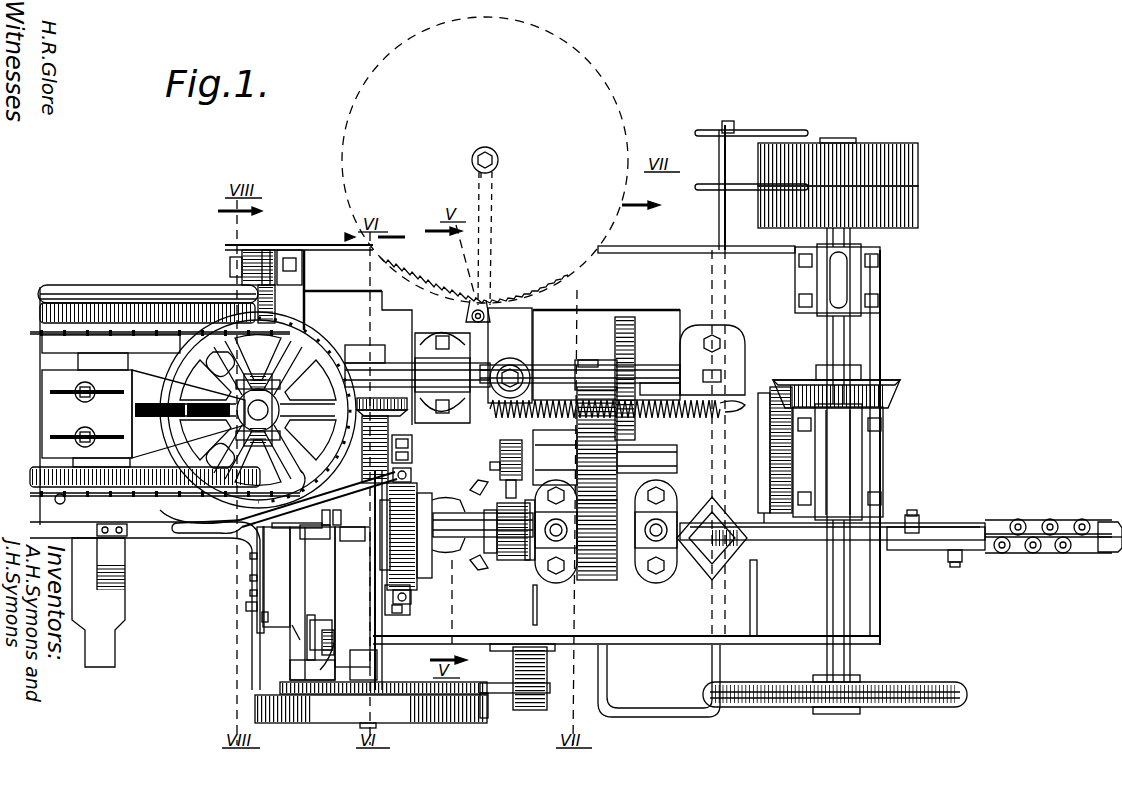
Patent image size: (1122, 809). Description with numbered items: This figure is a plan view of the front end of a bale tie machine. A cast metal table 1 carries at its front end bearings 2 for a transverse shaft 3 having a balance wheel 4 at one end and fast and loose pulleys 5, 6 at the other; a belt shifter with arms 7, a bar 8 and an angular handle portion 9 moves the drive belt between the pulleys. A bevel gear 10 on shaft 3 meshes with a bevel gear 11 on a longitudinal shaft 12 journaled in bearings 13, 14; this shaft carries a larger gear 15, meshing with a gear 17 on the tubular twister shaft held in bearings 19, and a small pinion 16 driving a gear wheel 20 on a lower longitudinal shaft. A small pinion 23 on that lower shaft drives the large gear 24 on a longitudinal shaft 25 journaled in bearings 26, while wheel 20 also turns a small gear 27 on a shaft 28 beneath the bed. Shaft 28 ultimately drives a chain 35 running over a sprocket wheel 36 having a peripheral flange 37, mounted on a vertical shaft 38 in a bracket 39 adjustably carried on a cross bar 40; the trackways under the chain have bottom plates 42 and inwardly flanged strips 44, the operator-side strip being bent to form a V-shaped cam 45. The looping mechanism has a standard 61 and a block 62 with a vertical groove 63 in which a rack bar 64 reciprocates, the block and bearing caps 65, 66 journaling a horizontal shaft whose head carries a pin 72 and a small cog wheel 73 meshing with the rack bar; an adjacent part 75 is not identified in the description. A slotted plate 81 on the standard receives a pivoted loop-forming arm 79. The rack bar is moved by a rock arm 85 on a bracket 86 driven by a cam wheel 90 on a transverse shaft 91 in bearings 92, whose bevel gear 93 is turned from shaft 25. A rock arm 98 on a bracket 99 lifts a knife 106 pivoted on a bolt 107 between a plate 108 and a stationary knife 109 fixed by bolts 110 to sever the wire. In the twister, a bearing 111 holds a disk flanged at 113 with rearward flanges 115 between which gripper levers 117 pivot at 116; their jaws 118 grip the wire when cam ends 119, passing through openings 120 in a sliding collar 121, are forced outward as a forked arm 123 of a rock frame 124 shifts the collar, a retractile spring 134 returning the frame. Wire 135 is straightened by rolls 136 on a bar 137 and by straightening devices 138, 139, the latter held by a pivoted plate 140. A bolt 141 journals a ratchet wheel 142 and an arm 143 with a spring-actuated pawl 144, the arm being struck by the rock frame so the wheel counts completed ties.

The table 1 is at (881, 345).
The bearings 2 is at (881, 283).
The transverse shaft 3 is at (851, 663).
The balance wheel 4 is at (985, 677).
The fast pulley 5 is at (919, 208).
The loose pulley 6 is at (919, 163).
The arms 7 is at (748, 137).
The bar 8 is at (718, 220).
The angular portion 9 is at (659, 681).
The bevel gear 10 is at (898, 381).
The bevel gear 11 is at (778, 386).
The longitudinal shaft 12 is at (660, 418).
The bearing 13 is at (763, 392).
The bearing 14 is at (576, 433).
The larger gear 15 is at (618, 480).
The small pinion 16 is at (555, 457).
The gear 17 is at (598, 582).
The bearings 19 is at (556, 584).
The gear wheel 20 is at (578, 368).
The small pinion 23 is at (645, 398).
The large gear 24 is at (614, 327).
The longitudinal shaft 25 is at (408, 362).
The bearings 26 is at (418, 345).
The small gear 27 is at (585, 360).
The longitudinal shaft 28 is at (365, 335).
The chain 35 is at (95, 496).
The sprocket wheel 36 is at (228, 335).
The peripheral flange 37 is at (240, 330).
The vertical shaft 38 is at (247, 410).
The bracket 39 is at (125, 398).
The cross bar 40 is at (126, 598).
The bottom plates 42 is at (70, 290).
The longitudinal strips 44 is at (105, 330).
The V-shaped cam 45 is at (230, 508).
The standard 61 is at (290, 653).
The block 62 is at (312, 603).
The vertical groove 63 is at (321, 625).
The rack bar 64 is at (307, 648).
The bearing cap 65 is at (352, 597).
The bearing cap 66 is at (377, 668).
The pin 72 is at (273, 580).
The small cog wheel 73 is at (335, 645).
The bar 75 is at (295, 549).
The pivoted arm 79 is at (341, 507).
The plate 81 is at (319, 507).
The rock arm 85 is at (505, 694).
The bracket 86 is at (503, 651).
The cam wheel 90 is at (322, 723).
The transverse shaft 91 is at (378, 727).
The bearings 92 is at (410, 450).
The bevel gear 93 is at (372, 398).
The rock arm 98 is at (272, 253).
The bracket 99 is at (255, 252).
The knife 106 is at (250, 592).
The bolt 107 is at (246, 606).
The plate 108 is at (290, 632).
The stationary knife 109 is at (262, 618).
The bolts 110 is at (250, 556).
The bearing 111 is at (478, 572).
The flange 113 is at (420, 595).
The flanges 115 is at (420, 538).
The pivot 116 is at (462, 512).
The gripper levers 117 is at (444, 505).
The jaws 118 is at (352, 545).
The cam ends 119 is at (528, 565).
The openings 120 is at (520, 561).
The collar 121 is at (496, 458).
The arm 123 is at (538, 600).
The rock frame 124 is at (510, 355).
The retractile spring 134 is at (510, 369).
The wire 135 is at (996, 522).
The rolls 136 is at (1070, 520).
The bar 137 is at (945, 517).
The supplemental straightening device 138 is at (938, 541).
The straightening device 139 is at (793, 541).
The pivoted plate 140 is at (706, 575).
The bolt 141 is at (492, 150).
The ratchet wheel 142 is at (558, 50).
The arm 143 is at (493, 192).
The spring-actuated pawl 144 is at (455, 272).